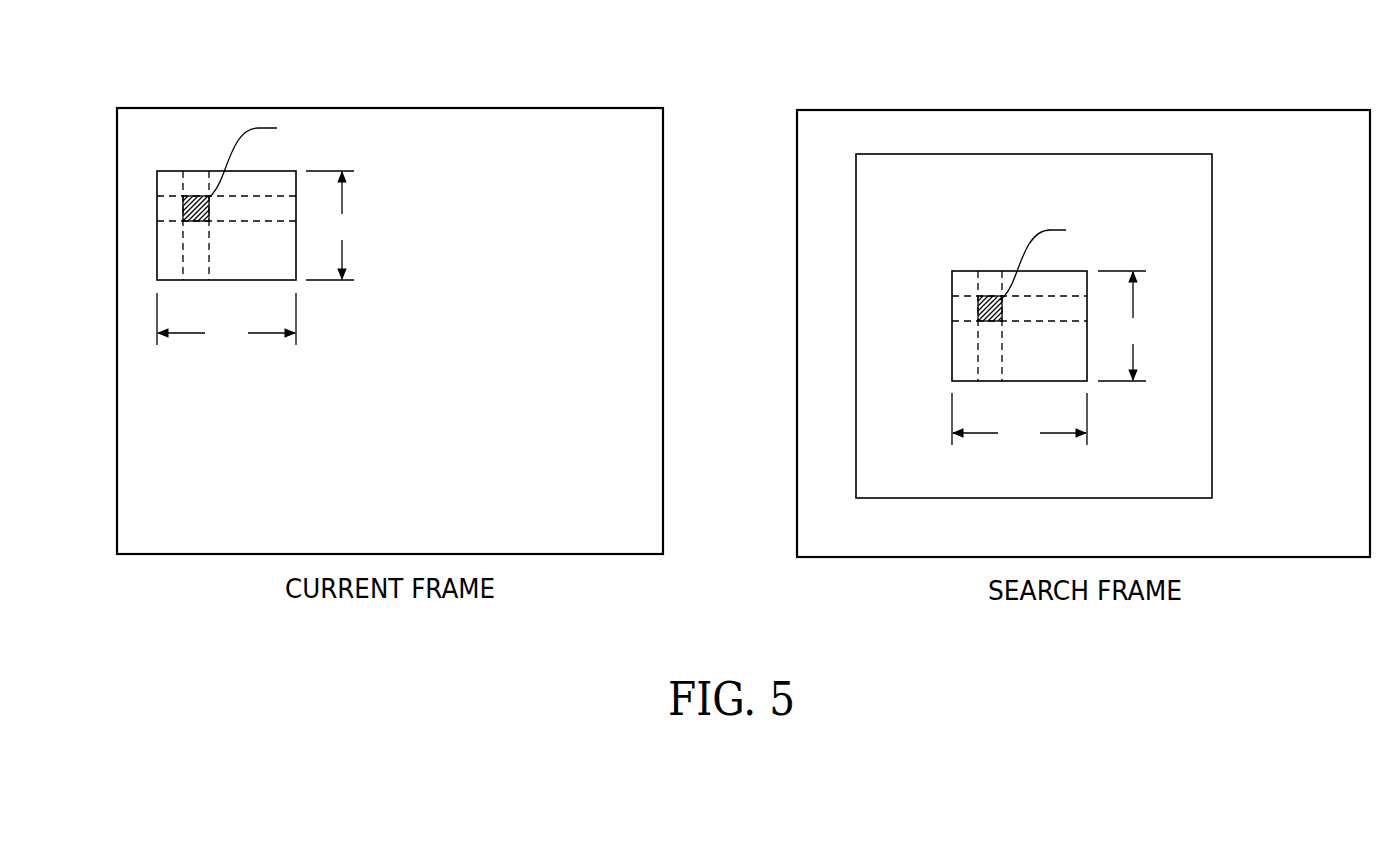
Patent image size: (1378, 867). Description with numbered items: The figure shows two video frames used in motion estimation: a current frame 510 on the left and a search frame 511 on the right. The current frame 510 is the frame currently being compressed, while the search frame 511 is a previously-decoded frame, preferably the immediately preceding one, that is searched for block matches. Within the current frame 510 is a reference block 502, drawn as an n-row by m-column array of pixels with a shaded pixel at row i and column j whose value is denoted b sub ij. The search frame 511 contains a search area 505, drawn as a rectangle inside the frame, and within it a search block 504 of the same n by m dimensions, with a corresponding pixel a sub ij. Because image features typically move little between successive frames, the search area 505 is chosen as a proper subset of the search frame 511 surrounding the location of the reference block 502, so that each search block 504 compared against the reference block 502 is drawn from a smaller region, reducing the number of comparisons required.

The current frame 510 is at (396, 108).
The search frame 511 is at (1094, 110).
The reference block 502 is at (165, 281).
The search block 504 is at (1057, 382).
The search area 505 is at (1213, 326).